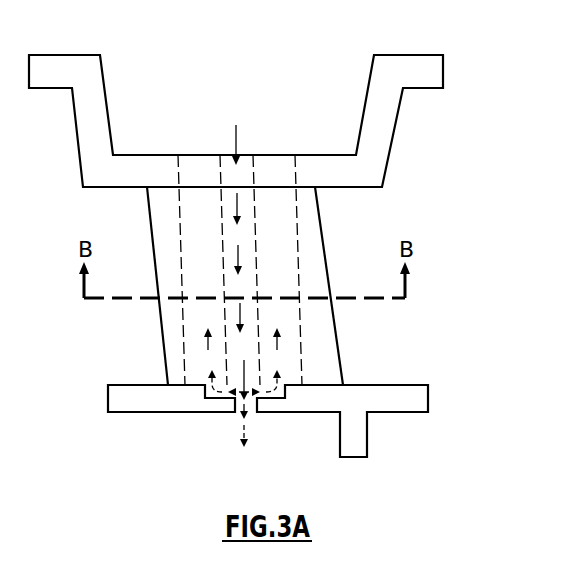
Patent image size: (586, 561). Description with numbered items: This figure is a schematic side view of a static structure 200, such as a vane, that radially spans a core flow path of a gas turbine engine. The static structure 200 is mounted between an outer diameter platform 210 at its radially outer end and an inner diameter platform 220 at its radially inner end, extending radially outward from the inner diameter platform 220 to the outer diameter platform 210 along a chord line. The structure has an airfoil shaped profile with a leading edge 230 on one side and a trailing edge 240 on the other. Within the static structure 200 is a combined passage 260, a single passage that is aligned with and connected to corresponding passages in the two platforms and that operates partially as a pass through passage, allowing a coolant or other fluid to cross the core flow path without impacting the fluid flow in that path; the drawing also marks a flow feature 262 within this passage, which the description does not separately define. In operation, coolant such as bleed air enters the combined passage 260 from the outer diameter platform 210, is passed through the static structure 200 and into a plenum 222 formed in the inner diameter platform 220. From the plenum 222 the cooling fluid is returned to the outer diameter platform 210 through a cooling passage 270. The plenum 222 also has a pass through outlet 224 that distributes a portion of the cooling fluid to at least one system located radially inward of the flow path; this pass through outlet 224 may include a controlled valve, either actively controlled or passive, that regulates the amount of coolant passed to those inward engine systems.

The static structure 200 is at (252, 234).
The outer diameter platform 210 is at (432, 70).
The inner diameter platform 220 is at (383, 402).
The plenum 222 is at (280, 393).
The pass through outlet 224 is at (240, 405).
The leading edge 230 is at (150, 240).
The trailing edge 240 is at (325, 252).
The combined passage 260 is at (247, 237).
The flow path 262 is at (242, 173).
The cooling passage 270 is at (198, 202).